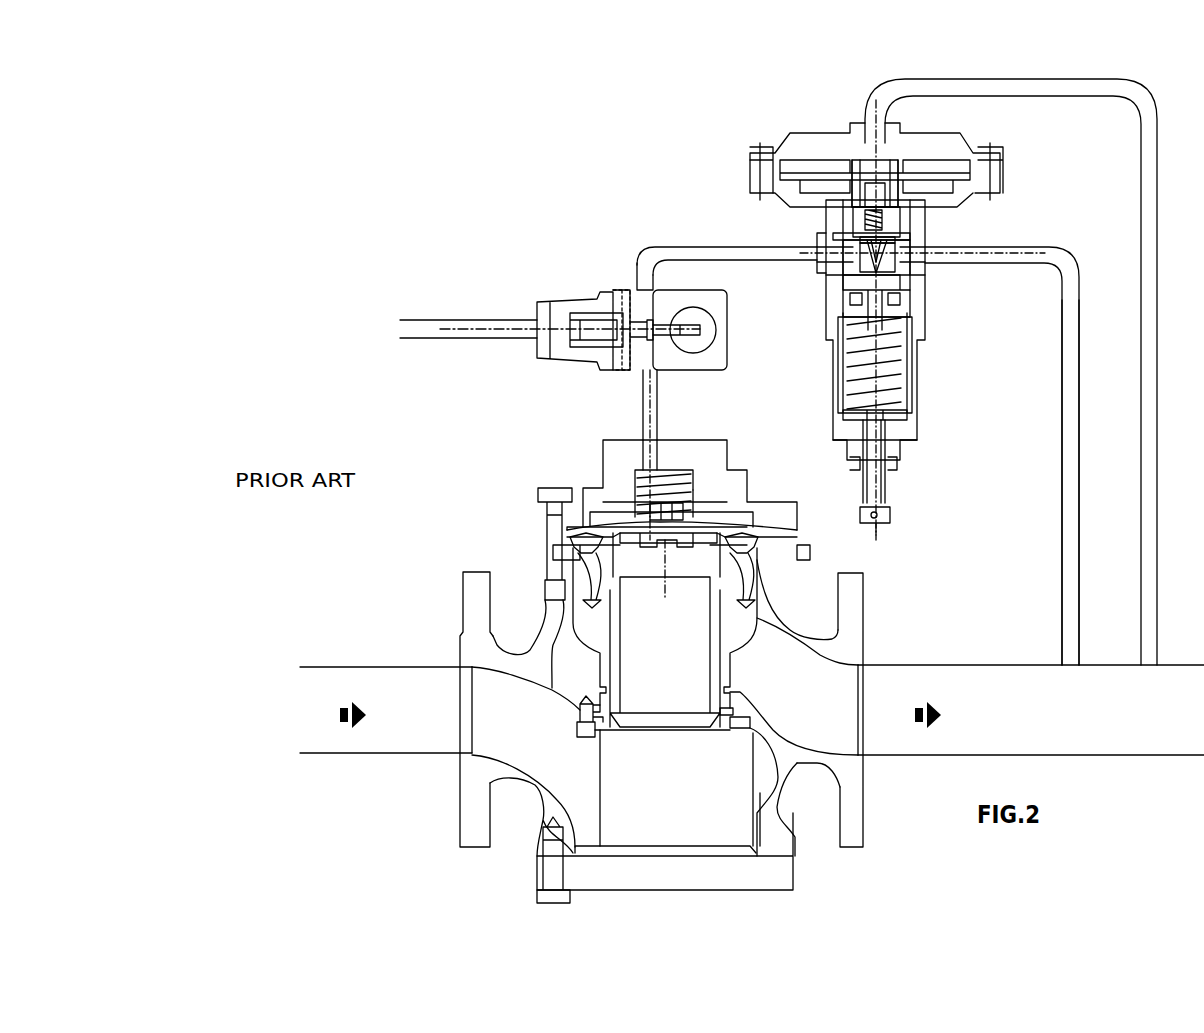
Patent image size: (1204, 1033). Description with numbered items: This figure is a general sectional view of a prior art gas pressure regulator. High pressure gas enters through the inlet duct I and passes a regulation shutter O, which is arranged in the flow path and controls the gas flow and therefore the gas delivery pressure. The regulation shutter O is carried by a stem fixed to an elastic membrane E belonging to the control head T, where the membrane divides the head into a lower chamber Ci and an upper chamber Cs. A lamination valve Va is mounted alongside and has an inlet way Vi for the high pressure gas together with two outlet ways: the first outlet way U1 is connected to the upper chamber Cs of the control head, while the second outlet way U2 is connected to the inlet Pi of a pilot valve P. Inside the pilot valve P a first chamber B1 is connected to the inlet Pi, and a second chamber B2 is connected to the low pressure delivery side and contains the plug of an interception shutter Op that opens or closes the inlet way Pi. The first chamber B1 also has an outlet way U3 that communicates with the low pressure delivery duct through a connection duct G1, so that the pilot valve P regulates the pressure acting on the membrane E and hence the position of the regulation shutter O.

The inlet duct I is at (406, 628).
The control head T is at (607, 423).
The elastic membrane E is at (627, 530).
The regulation shutter O is at (583, 523).
The upper chamber Cs is at (737, 527).
The lower chamber Ci is at (757, 542).
The first outlet way U1 is at (670, 410).
The lamination valve Va is at (548, 245).
The inlet way Vi is at (453, 298).
The second outlet way U2 is at (622, 214).
The pilot valve inlet Pi is at (677, 196).
The outlet way U3 is at (960, 237).
The second chamber B2 is at (893, 190).
The first chamber B1 is at (892, 262).
The interception shutter Op is at (855, 240).
The pilot valve P is at (800, 293).
The connection duct G1 is at (1058, 428).